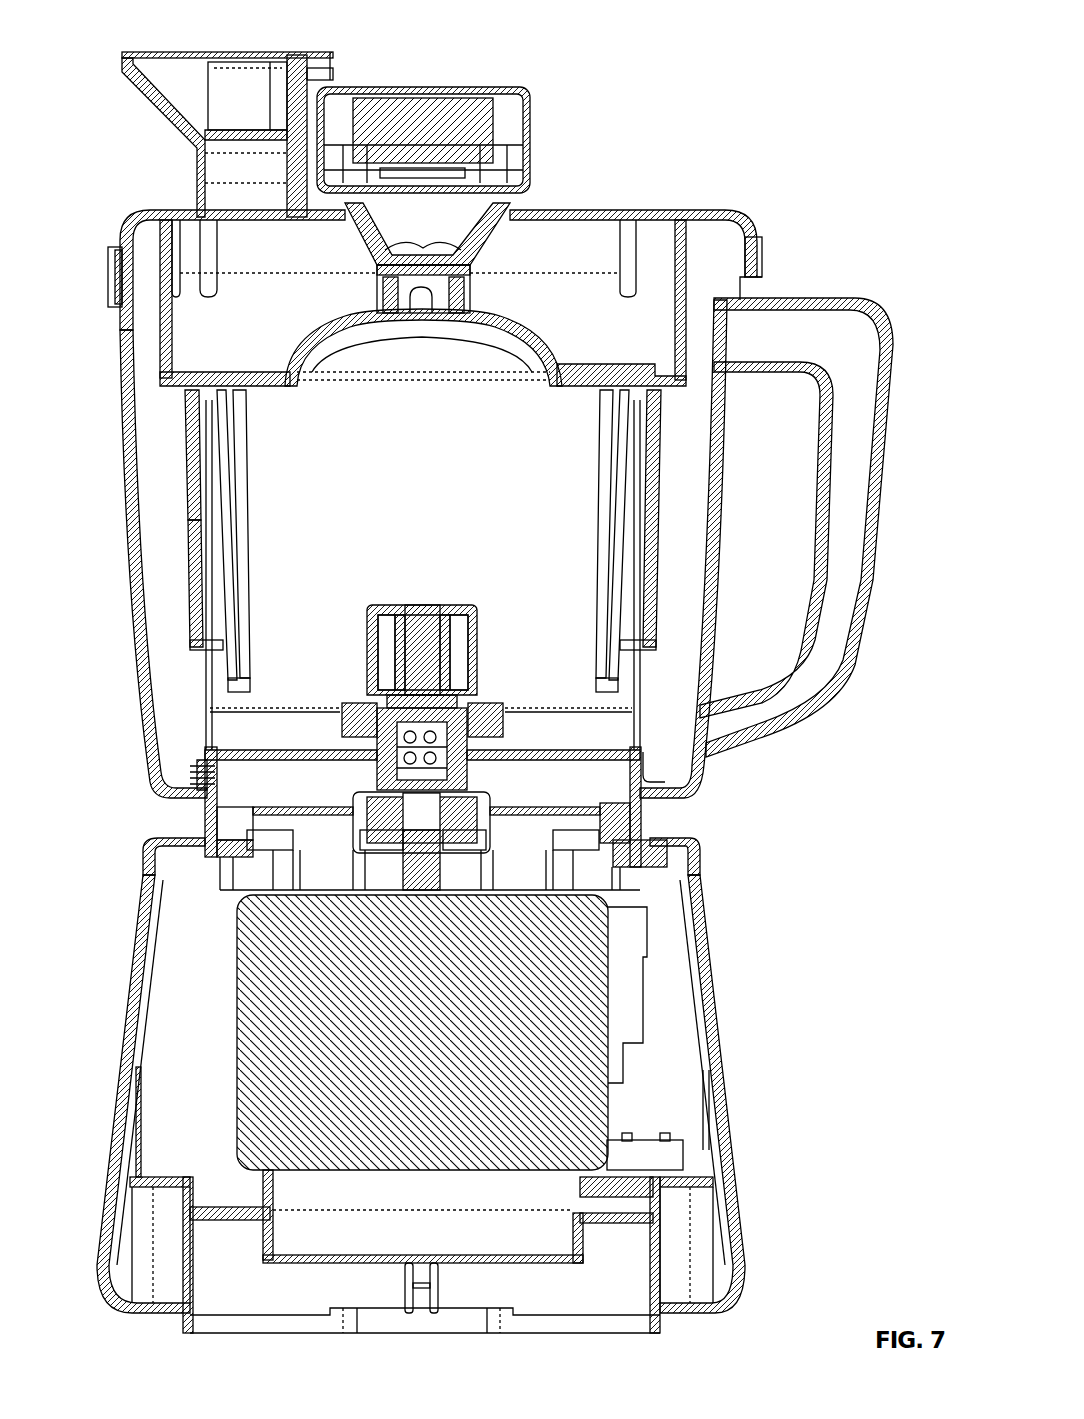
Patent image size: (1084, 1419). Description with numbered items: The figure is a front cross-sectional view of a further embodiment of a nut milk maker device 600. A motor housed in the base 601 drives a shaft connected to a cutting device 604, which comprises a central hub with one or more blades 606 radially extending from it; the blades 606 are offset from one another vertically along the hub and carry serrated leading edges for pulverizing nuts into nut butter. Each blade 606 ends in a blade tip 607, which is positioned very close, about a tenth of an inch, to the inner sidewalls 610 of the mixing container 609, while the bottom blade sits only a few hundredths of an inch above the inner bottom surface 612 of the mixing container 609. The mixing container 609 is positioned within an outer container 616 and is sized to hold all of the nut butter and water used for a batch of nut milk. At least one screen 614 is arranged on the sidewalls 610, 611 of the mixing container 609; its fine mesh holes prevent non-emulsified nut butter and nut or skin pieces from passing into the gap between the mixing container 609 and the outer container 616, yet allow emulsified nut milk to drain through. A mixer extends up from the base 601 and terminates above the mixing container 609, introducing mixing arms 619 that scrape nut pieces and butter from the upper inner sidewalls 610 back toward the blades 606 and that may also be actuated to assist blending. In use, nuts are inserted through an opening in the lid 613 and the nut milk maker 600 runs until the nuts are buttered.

The nut milk maker device 600 is at (812, 88).
The base 601 is at (712, 927).
The cutting device 604 is at (462, 595).
The blades 606 is at (210, 808).
The blade tip 607 is at (205, 717).
The mixing container 609 is at (180, 426).
The inner sidewalls 610 is at (190, 466).
The sidewalls 611 is at (187, 543).
The inner bottom surface 612 is at (262, 748).
The lid 613 is at (150, 212).
The screen 614 is at (197, 670).
The outer container 616 is at (132, 625).
The mixing arms 619 is at (233, 508).